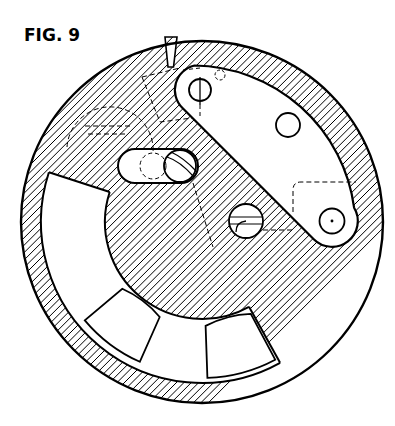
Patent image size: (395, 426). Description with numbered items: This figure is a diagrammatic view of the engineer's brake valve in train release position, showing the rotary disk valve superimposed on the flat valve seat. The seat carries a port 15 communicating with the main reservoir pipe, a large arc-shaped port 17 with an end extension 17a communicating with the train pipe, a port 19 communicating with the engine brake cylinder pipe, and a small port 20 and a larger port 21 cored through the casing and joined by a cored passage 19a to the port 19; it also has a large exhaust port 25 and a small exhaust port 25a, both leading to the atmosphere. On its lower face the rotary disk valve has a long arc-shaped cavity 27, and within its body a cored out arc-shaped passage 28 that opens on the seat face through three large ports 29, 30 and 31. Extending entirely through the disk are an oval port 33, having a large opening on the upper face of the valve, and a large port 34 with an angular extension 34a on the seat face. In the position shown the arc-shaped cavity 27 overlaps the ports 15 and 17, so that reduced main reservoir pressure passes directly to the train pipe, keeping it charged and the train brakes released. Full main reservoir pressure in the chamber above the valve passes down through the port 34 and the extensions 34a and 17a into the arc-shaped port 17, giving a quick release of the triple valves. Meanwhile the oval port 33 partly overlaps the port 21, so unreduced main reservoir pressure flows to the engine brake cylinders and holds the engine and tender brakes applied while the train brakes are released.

The port 15 is at (122, 325).
The arc-shaped port 17 is at (241, 346).
The end extension 17a is at (248, 302).
The port 19 is at (190, 307).
The cored passage 19a is at (133, 232).
The small port 20 is at (50, 143).
The larger port 21 is at (99, 197).
The large exhaust port 25 is at (171, 40).
The small exhaust port 25a is at (228, 69).
The arc-shaped cavity 27 is at (160, 277).
The cored out arc-shaped passage 28 is at (266, 156).
The large port 29 is at (211, 92).
The large port 30 is at (283, 130).
The large port 31 is at (331, 209).
The oval port 33 is at (165, 198).
The large port 34 is at (258, 204).
The angular extension 34a is at (309, 206).